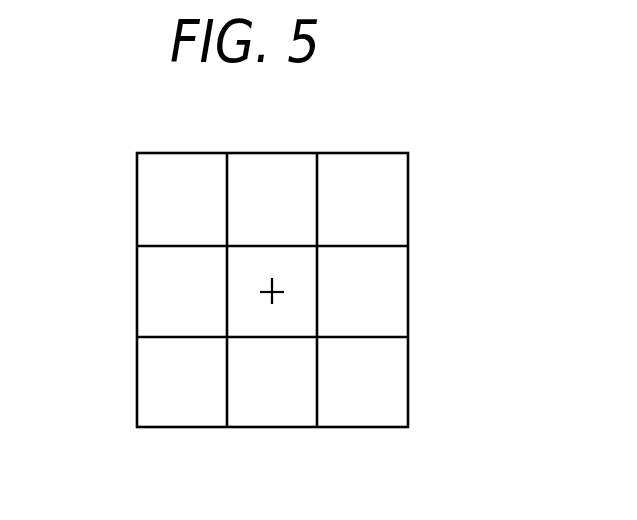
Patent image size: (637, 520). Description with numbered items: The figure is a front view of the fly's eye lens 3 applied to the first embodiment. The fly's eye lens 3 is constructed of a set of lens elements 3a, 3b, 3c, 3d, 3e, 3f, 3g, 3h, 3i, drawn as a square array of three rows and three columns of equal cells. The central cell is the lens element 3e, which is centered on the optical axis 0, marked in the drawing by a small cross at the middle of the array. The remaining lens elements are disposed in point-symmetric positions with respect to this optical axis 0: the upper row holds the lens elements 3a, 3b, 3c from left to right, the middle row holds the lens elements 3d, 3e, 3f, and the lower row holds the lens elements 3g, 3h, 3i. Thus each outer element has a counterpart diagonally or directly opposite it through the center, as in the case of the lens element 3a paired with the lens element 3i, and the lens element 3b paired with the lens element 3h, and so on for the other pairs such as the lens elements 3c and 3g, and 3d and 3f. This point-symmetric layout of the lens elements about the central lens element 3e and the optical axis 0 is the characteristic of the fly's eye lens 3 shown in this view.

The fly's eye lens 3 is at (272, 290).
The lens element 3a is at (157, 181).
The lens element 3b is at (273, 168).
The lens element 3c is at (390, 184).
The lens element 3d is at (160, 270).
The lens element 3e is at (262, 291).
The lens element 3f is at (390, 311).
The lens element 3g is at (160, 365).
The lens element 3h is at (293, 403).
The lens element 3i is at (390, 383).
The optical axis 0 is at (278, 288).